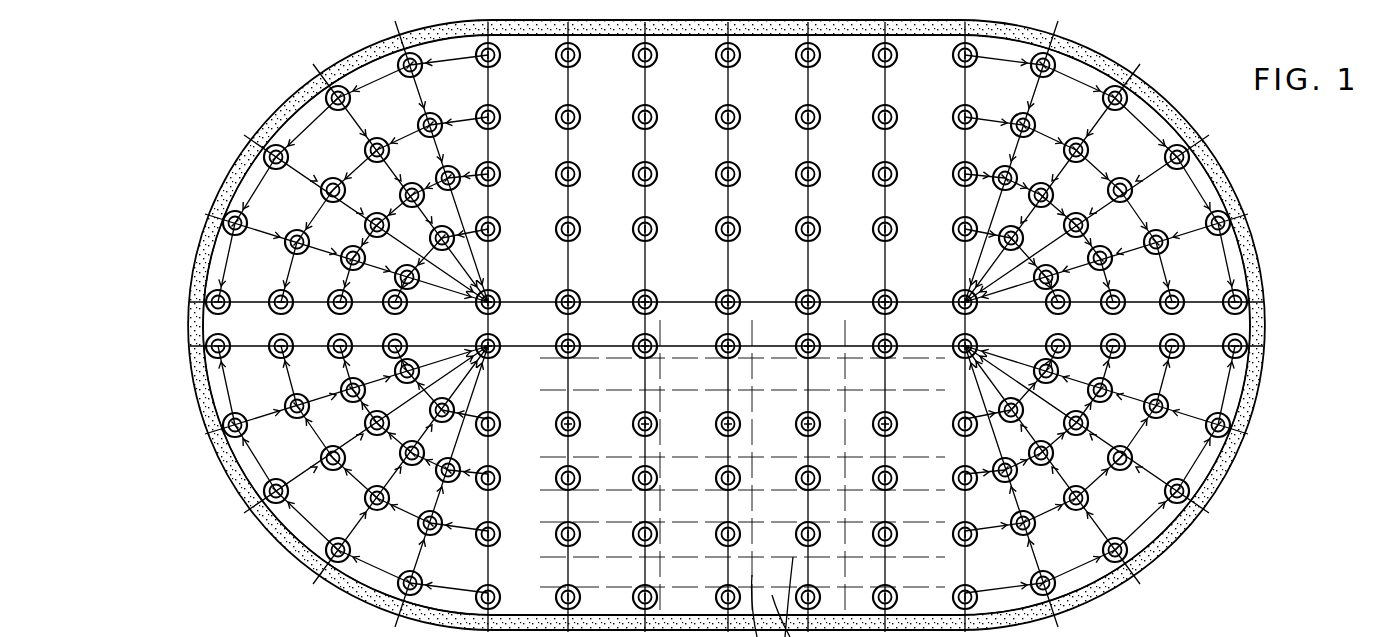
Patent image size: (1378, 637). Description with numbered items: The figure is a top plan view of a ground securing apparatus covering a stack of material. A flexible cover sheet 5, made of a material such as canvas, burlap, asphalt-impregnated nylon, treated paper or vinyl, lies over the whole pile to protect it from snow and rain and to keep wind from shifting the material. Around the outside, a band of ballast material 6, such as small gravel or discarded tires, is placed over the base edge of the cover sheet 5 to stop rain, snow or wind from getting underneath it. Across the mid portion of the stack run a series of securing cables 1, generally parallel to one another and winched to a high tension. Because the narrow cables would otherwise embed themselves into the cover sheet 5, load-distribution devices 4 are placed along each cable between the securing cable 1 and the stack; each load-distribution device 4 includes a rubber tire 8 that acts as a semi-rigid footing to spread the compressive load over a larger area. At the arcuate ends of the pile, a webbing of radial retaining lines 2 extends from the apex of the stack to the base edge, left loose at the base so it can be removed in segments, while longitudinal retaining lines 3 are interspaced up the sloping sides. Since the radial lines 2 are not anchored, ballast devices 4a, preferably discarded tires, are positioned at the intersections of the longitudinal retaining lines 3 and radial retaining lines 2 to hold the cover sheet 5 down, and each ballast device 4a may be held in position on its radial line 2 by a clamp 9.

The securing cable 1 is at (645, 84).
The radial retaining line 2 is at (266, 231).
The longitudinal retaining line 3 is at (350, 167).
The load-distribution device 4 is at (711, 235).
The ballast device 4a is at (1045, 338).
The cover sheet 5 is at (247, 385).
The ballast material 6 is at (212, 258).
The rubber tire 8 is at (280, 148).
The clamp 9 is at (223, 226).